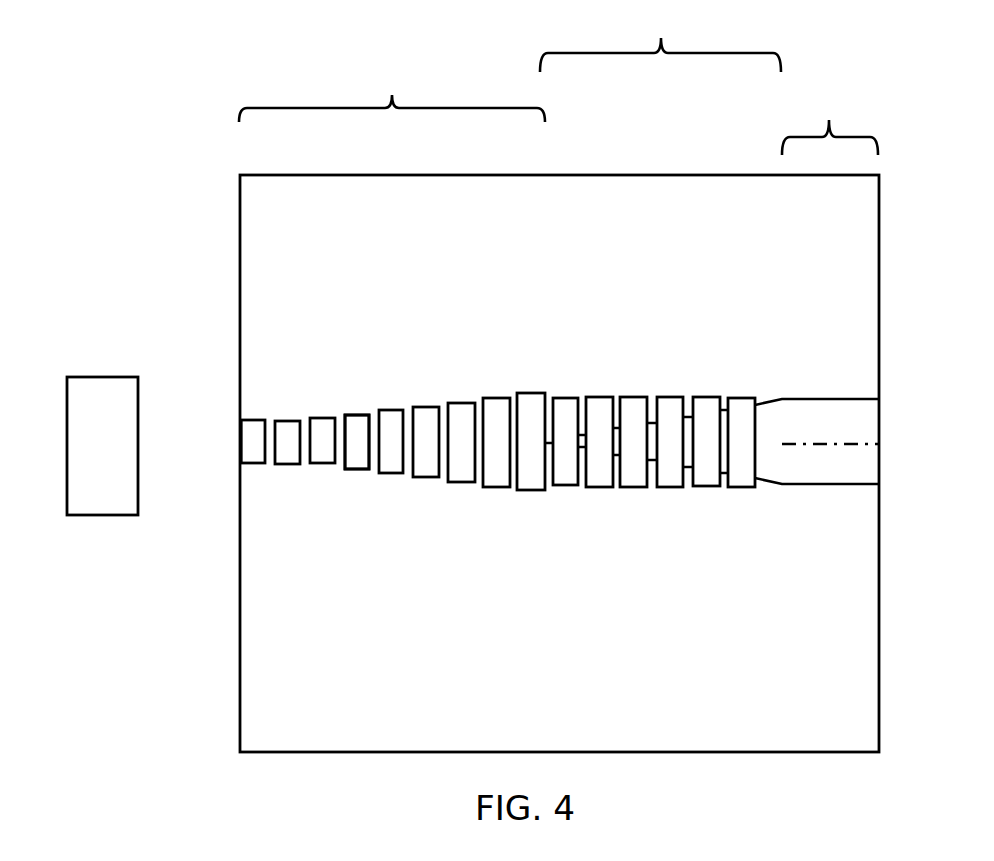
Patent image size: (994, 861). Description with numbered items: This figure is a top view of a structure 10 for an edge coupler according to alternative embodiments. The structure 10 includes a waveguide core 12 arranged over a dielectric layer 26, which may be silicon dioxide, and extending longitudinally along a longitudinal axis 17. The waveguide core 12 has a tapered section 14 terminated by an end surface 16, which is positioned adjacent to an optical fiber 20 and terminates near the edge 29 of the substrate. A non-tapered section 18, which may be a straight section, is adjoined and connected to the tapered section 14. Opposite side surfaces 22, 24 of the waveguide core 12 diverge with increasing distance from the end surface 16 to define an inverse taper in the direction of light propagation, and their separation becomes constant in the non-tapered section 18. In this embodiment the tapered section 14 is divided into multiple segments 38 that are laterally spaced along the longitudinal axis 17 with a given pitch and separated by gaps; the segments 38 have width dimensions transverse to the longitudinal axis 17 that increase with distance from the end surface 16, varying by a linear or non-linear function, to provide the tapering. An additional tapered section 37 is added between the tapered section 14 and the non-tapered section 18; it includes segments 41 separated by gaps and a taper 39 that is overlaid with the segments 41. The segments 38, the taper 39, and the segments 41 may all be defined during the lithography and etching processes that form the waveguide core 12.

The structure 10 is at (172, 247).
The waveguide core 12 is at (498, 474).
The tapered section 14 is at (392, 92).
The end surface 16 is at (240, 448).
The longitudinal axis 17 is at (858, 440).
The non-tapered section 18 is at (817, 287).
The optical fiber 20 is at (90, 395).
The side surface 22 is at (362, 417).
The side surface 24 is at (355, 470).
The dielectric layer 26 is at (399, 719).
The edge 29 is at (242, 642).
The tapered section 37 is at (660, 42).
The segments 38 is at (320, 438).
The taper 39 is at (690, 433).
The segments 41 is at (571, 422).